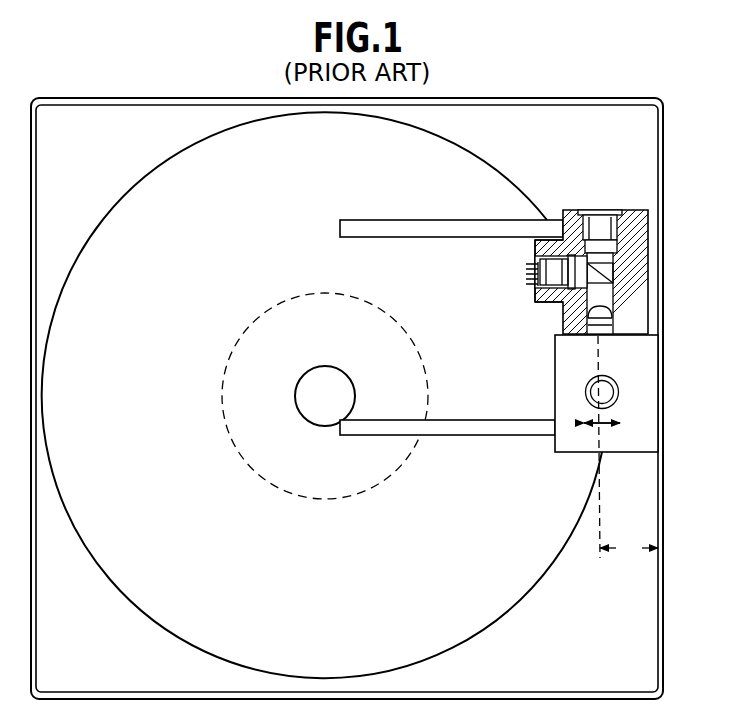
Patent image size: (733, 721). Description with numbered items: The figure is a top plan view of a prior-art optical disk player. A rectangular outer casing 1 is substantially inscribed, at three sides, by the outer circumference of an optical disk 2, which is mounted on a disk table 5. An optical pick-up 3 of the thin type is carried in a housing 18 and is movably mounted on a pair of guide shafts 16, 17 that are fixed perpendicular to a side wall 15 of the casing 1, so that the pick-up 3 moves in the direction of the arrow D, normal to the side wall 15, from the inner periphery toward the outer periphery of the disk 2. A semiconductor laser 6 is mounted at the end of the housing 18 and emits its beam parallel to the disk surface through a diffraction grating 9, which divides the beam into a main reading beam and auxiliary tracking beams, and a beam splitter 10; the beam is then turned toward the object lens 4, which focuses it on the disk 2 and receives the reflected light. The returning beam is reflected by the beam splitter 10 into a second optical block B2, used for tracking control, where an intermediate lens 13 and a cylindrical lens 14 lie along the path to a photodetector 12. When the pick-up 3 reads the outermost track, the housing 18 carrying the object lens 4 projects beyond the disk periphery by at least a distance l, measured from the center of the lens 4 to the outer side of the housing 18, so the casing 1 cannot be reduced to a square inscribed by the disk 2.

The outer casing 1 is at (472, 97).
The side wall 15 is at (663, 127).
The optical disk 2 is at (132, 598).
The disk table 5 is at (243, 336).
The guide shaft 16 is at (400, 220).
The guide shaft 17 is at (380, 433).
The housing 18 is at (643, 262).
The intermediate lens 13 is at (565, 303).
The semiconductor laser 6 is at (597, 209).
The diffraction grating 9 is at (617, 238).
The beam splitter 10 is at (612, 273).
The photodetector 12 is at (535, 287).
The cylindrical lens 14 is at (538, 262).
The optical block B2 is at (513, 280).
The optical pick-up 3 is at (680, 368).
The object lens 4 is at (585, 395).
The arrow D is at (606, 425).
The distance l is at (629, 549).